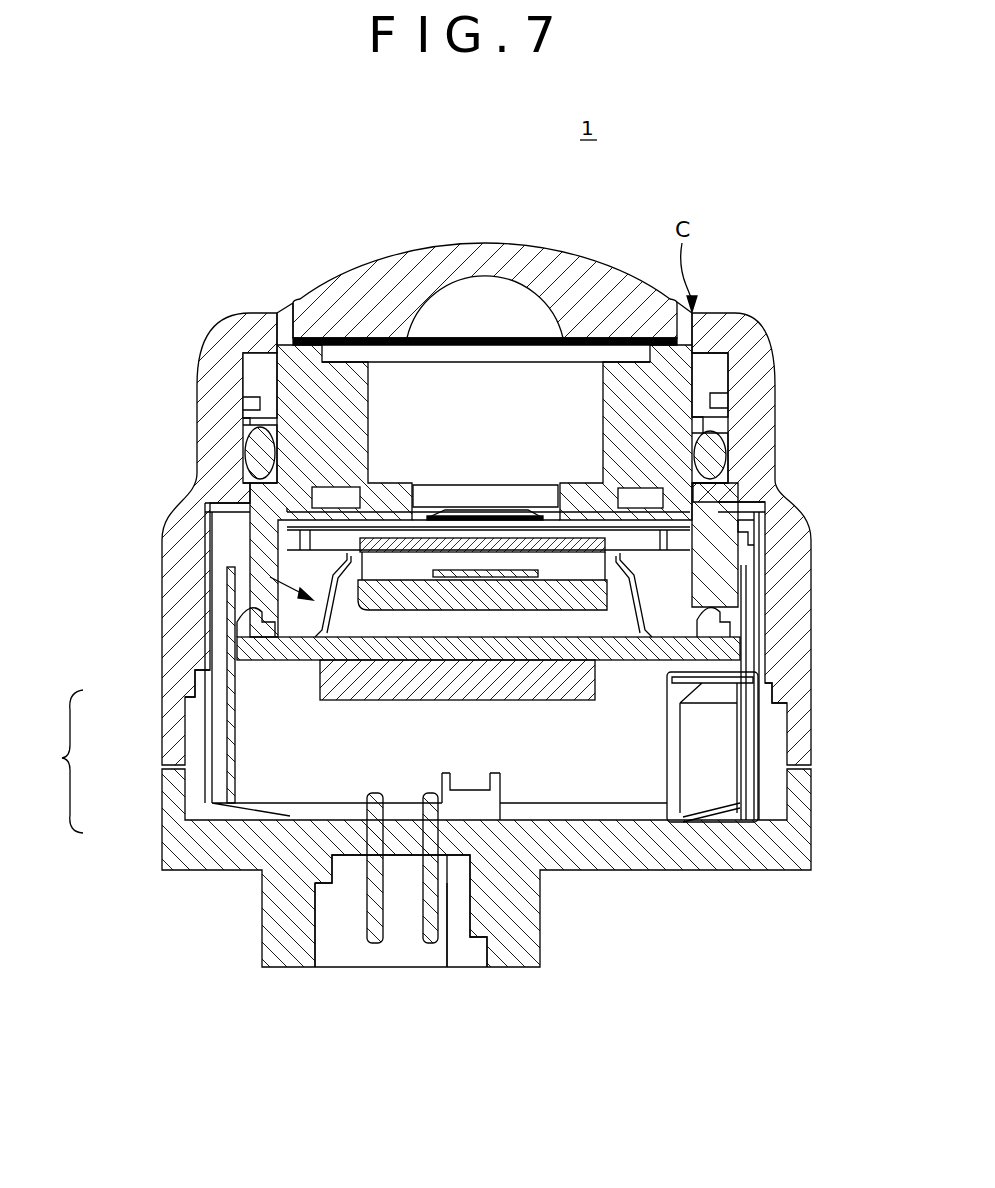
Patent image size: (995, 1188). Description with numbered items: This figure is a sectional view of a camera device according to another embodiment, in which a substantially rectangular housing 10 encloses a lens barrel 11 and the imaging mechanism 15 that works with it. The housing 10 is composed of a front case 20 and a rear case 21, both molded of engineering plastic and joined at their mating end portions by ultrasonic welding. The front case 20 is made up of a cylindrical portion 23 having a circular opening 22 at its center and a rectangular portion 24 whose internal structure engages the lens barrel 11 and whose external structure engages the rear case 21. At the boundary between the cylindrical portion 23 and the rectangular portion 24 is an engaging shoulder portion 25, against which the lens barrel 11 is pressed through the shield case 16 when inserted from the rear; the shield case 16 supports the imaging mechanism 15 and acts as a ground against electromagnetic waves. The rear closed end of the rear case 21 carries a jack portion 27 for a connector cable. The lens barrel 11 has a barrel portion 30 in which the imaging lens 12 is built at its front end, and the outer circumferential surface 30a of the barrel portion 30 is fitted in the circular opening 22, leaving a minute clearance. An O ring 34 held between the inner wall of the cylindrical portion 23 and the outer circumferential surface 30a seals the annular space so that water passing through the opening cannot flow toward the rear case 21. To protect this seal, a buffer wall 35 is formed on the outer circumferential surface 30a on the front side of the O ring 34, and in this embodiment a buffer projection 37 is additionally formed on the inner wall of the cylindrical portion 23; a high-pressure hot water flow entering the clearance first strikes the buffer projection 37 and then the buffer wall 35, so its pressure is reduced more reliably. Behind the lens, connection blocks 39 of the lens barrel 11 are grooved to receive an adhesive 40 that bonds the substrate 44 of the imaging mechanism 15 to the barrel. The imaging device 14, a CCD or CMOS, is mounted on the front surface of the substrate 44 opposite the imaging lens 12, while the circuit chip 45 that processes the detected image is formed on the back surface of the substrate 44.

The housing 10 is at (59, 761).
The lens barrel 11 is at (757, 570).
The imaging lens 12 is at (405, 272).
The imaging device 14 is at (587, 575).
The imaging mechanism 15 is at (270, 577).
The shield case 16 is at (240, 632).
The front case 20 is at (173, 710).
The rear case 21 is at (455, 896).
The circular opening 22 is at (288, 340).
The cylindrical portion 23 is at (200, 368).
The rectangular portion 24 is at (205, 660).
The engaging shoulder portion 25 is at (205, 508).
The jack portion 27 is at (470, 950).
The barrel portion 30 is at (735, 372).
The outer circumferential surface 30a is at (735, 345).
The O ring 34 is at (737, 463).
The buffer wall 35 is at (245, 432).
The buffer projection 37 is at (245, 405).
The connection block 39 is at (762, 600).
The adhesive 40 is at (763, 633).
The substrate 44 is at (262, 660).
The circuit chip 45 is at (565, 700).